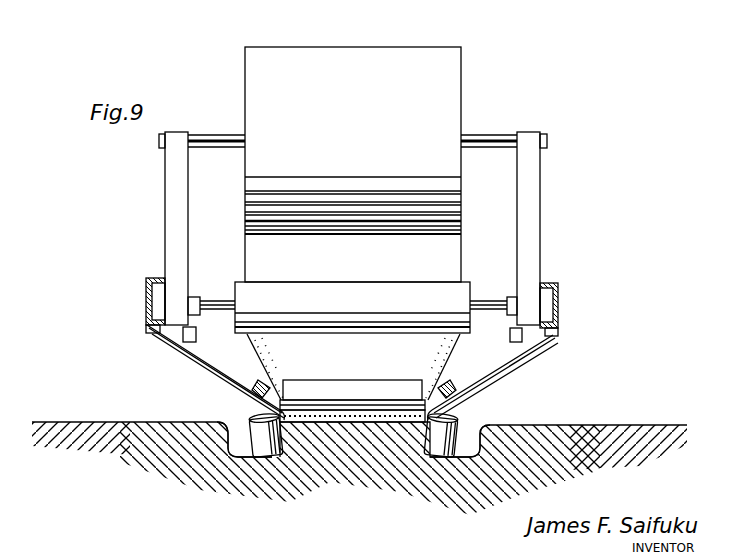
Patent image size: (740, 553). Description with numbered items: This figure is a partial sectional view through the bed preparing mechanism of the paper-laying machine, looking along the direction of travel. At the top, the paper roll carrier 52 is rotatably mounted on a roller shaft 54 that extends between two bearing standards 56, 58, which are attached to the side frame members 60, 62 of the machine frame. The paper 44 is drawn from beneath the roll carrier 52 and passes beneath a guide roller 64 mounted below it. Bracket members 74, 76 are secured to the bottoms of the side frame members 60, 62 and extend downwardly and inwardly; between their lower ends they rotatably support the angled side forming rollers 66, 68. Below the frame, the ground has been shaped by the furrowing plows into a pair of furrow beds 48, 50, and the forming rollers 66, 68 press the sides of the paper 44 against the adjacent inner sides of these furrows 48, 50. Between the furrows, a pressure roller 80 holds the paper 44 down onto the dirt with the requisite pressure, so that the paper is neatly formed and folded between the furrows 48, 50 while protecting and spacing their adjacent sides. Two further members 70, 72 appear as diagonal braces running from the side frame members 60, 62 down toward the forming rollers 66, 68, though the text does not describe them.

The paper 44 is at (357, 424).
The furrow bed 48 is at (238, 458).
The furrow bed 50 is at (458, 458).
The paper roll carrier 52 is at (408, 60).
The roller shaft 54 is at (208, 137).
The bearing standard 56 is at (170, 222).
The bearing standard 58 is at (535, 223).
The side frame member 60 is at (146, 297).
The side frame member 62 is at (560, 314).
The guide roller 64 is at (453, 298).
The angled forming roller 66 is at (255, 435).
The angled forming roller 68 is at (443, 440).
The left brace 70 is at (212, 361).
The right brace 72 is at (505, 360).
The bracket member 74 is at (228, 364).
The bracket member 76 is at (465, 372).
The pressure roller 80 is at (337, 400).